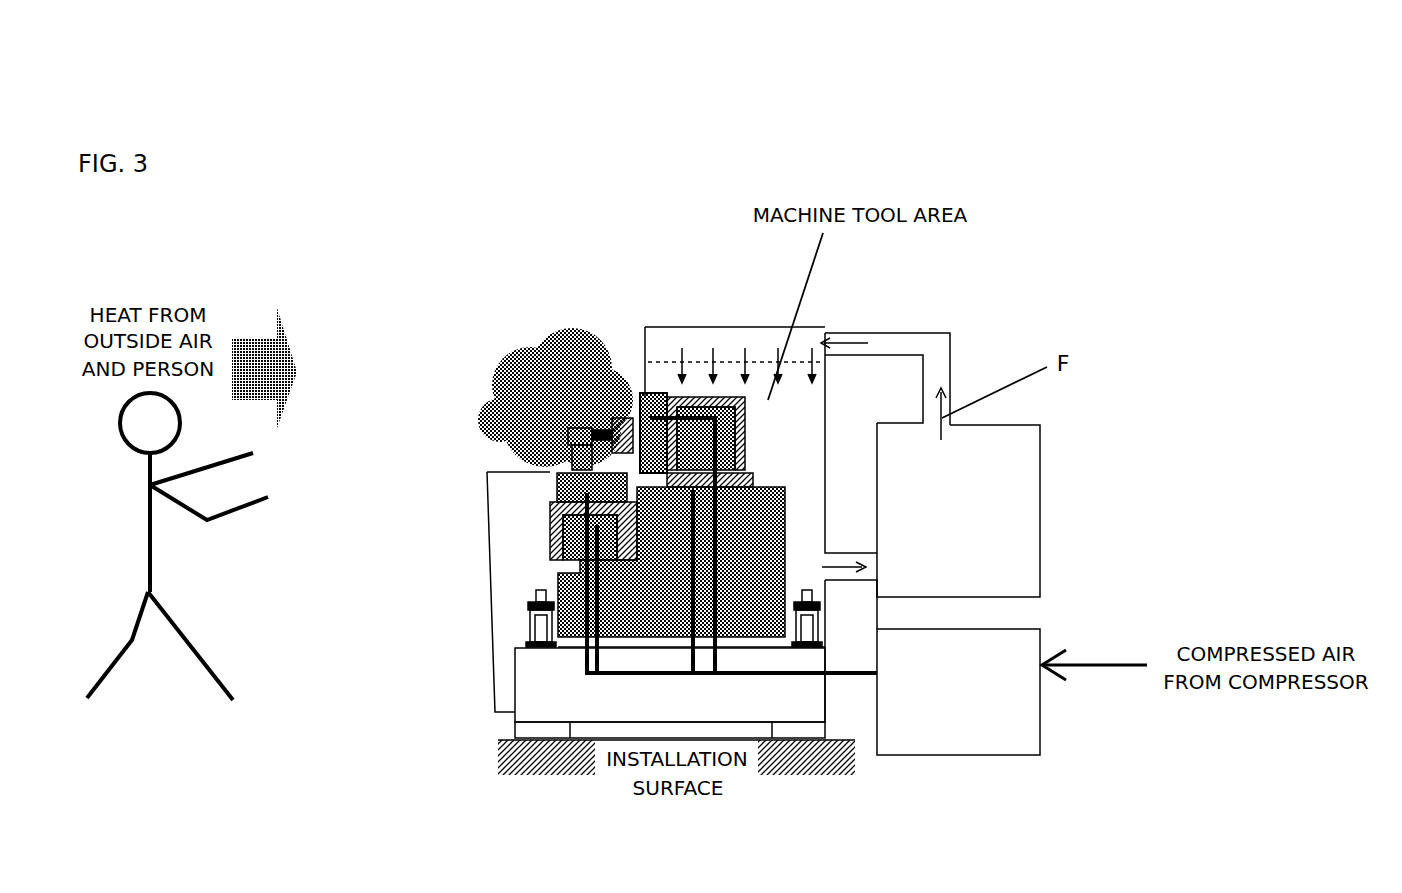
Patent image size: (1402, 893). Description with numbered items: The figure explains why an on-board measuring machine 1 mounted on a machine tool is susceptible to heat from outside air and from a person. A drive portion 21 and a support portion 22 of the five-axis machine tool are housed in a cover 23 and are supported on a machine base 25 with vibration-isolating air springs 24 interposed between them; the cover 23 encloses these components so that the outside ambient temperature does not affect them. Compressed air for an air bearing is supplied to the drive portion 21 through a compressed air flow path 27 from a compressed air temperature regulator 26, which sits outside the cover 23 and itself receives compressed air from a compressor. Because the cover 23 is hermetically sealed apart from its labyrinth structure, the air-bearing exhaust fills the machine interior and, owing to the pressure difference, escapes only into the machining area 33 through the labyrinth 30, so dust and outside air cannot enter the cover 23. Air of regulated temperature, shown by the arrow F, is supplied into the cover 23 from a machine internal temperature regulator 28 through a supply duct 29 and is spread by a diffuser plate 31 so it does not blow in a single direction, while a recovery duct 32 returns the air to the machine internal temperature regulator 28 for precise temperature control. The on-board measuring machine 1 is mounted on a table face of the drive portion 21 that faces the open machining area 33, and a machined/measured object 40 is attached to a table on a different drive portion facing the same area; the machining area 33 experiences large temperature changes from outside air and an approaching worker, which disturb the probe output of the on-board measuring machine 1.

The on-board measuring machine 1 is at (577, 432).
The drive portion 21 is at (558, 508).
The support portion 22 is at (558, 580).
The cover 23 is at (520, 470).
The vibration-isolating air springs 24 is at (527, 640).
The machine base 25 is at (585, 693).
The compressed air temperature regulator 26 is at (1000, 735).
The compressed air flow path 27 is at (860, 677).
The machine internal temperature regulator 28 is at (1006, 457).
The supply duct 29 is at (897, 347).
The labyrinth 30 is at (640, 395).
The diffuser plate 31 is at (793, 360).
The recovery duct 32 is at (848, 558).
The machining area 33 is at (500, 415).
The machined/measured object (workpiece) 40 is at (610, 418).